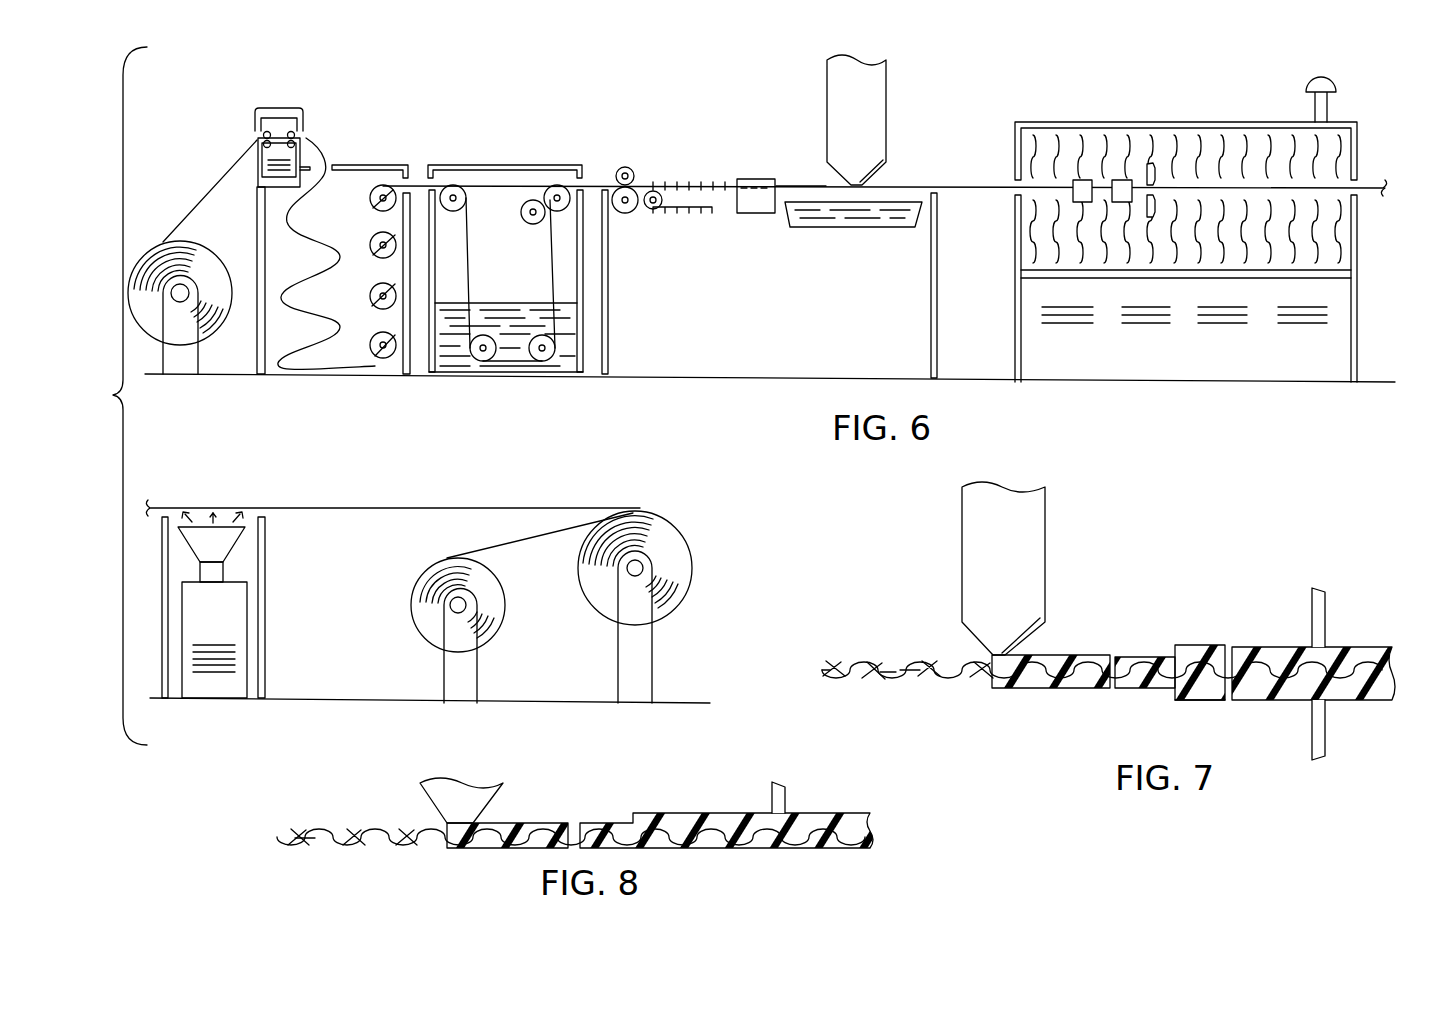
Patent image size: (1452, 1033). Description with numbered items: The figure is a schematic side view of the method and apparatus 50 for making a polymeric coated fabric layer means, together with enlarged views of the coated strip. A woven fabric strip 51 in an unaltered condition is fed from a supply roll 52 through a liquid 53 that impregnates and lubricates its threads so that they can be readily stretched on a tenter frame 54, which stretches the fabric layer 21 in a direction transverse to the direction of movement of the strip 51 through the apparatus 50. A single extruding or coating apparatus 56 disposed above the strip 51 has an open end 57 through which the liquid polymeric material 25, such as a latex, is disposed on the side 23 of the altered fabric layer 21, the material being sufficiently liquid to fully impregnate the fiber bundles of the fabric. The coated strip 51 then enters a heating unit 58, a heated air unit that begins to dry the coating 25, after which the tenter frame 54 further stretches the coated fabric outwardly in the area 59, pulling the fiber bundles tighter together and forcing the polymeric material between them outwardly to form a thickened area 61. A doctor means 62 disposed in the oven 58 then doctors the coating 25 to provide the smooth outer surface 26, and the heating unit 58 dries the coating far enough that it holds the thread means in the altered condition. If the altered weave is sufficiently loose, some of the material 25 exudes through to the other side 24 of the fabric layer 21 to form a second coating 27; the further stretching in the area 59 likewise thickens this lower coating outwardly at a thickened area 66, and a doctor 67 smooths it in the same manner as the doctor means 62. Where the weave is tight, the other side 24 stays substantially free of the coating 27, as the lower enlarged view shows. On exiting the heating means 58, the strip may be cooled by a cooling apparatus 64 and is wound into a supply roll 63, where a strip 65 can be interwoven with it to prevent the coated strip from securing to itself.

In FIG. 6, the fabric layer 21 is at (810, 182).
In FIG. 7, the fabric layer 21 is at (948, 682).
In FIG. 8, the fabric layer 21 is at (405, 850).
In FIG. 6, the side of fabric layer 23 is at (790, 184).
In FIG. 7, the side of fabric layer 23 is at (912, 665).
In FIG. 7, the other side of fabric layer 24 is at (888, 682).
In FIG. 8, the other side of fabric layer 24 is at (305, 850).
In FIG. 7, the layer of polymeric material 25 is at (1088, 658).
In FIG. 8, the layer of polymeric material 25 is at (523, 835).
In FIG. 7, the outer flat surface 26 is at (1358, 647).
In FIG. 7, the other layer of polymeric material 27 is at (1135, 684).
In FIG. 6, the method and apparatus 50 is at (698, 95).
In FIG. 6, the woven fabric strip 51 is at (217, 183).
In FIG. 7, the woven fabric strip 51 is at (850, 663).
In FIG. 6, the supply roll 52 is at (182, 250).
In FIG. 6, the liquid 53 is at (493, 305).
In FIG. 6, the tenter frame 54 is at (698, 176).
In FIG. 6, the coating apparatus 56 is at (876, 96).
In FIG. 7, the coating apparatus 56 is at (1038, 527).
In FIG. 6, the open end 57 is at (870, 180).
In FIG. 7, the open end 57 is at (1005, 650).
In FIG. 6, the heating unit 58 is at (1212, 119).
In FIG. 6, the area of further stretching 59 is at (1105, 204).
In FIG. 7, the thickened area 61 is at (1195, 647).
In FIG. 6, the doctor means 62 is at (1147, 165).
In FIG. 7, the doctor means 62 is at (1322, 598).
In FIG. 6, the supply roll 63 is at (678, 552).
In FIG. 6, the cooling apparatus 64 is at (243, 566).
In FIG. 6, the strip 65 is at (505, 545).
In FIG. 7, the thickened area of lower coating 66 is at (1190, 701).
In FIG. 6, the doctor 67 is at (1157, 212).
In FIG. 7, the doctor 67 is at (1328, 745).